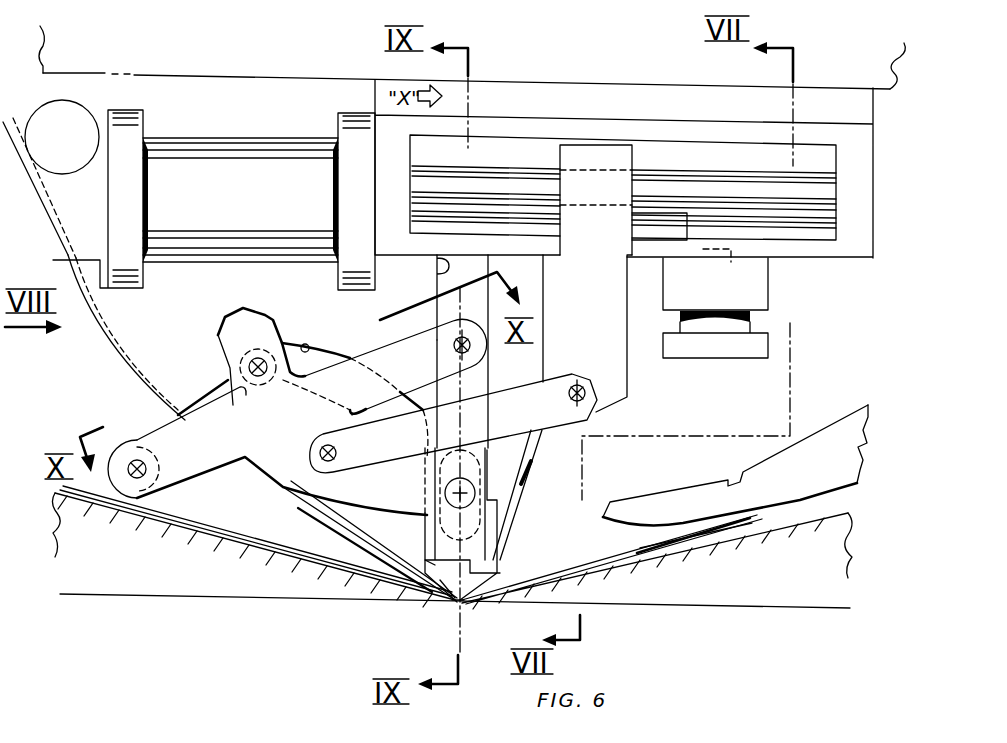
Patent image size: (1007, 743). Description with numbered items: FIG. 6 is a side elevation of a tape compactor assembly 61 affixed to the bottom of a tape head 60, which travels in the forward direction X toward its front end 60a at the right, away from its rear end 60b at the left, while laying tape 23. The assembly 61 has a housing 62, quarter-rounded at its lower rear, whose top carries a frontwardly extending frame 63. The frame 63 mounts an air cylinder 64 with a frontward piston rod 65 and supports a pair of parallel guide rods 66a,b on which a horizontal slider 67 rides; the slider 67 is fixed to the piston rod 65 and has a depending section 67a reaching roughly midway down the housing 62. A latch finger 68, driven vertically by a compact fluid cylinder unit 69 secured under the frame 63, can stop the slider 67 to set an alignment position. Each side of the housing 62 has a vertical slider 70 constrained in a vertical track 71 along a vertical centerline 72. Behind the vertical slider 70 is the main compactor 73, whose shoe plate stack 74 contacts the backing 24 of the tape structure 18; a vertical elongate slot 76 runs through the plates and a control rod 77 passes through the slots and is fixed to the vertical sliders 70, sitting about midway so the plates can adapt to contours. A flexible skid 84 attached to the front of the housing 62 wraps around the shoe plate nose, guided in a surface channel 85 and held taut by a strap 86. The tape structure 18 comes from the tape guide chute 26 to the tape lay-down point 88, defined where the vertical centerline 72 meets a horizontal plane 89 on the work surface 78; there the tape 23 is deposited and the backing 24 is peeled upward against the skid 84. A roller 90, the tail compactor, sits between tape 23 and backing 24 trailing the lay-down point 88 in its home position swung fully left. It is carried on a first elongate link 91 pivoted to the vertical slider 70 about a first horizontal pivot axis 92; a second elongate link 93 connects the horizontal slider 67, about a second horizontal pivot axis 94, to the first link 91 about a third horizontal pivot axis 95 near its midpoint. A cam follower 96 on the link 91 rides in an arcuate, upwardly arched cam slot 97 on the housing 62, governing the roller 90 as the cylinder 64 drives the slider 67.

The tape structure 18 is at (694, 542).
The tape 23 is at (267, 542).
The backing 24 is at (317, 530).
The tape guide chute 26 is at (735, 465).
The tape head 60 is at (228, 74).
The front end 60a is at (874, 58).
The rear end 60b is at (62, 46).
The tape compactor assembly 61 is at (102, 370).
The housing 62 is at (214, 217).
The frame 63 is at (705, 122).
The air cylinder 64 is at (312, 134).
The piston rod 65 is at (430, 244).
The guide rods 66a,b is at (454, 176).
The horizontal slider 67 is at (635, 160).
The depending section 67a is at (630, 388).
The latch finger 68 is at (740, 246).
The compact fluid cylinder unit 69 is at (768, 278).
The vertical slider 70 is at (497, 573).
The vertical track 71 is at (438, 276).
The vertical centerline 72 is at (460, 638).
The main compactor 73 is at (448, 568).
The shoe plate stack 74 is at (422, 563).
The vertical elongate slot 76 is at (497, 538).
The control rod 77 is at (440, 498).
The work surface 78 is at (213, 530).
The skid 84 is at (283, 487).
The surface channel 85 is at (150, 395).
The strap 86 is at (57, 224).
The tape lay-down point 88 is at (462, 598).
The horizontal plane 89 is at (600, 592).
The roller 90 is at (150, 492).
The first elongate link 91 is at (268, 411).
The first horizontal pivot axis 92 is at (452, 350).
The second elongate link 93 is at (453, 423).
The second horizontal pivot axis 94 is at (582, 388).
The third horizontal pivot axis 95 is at (337, 453).
The cam follower 96 is at (240, 374).
The cam slot 97 is at (308, 348).